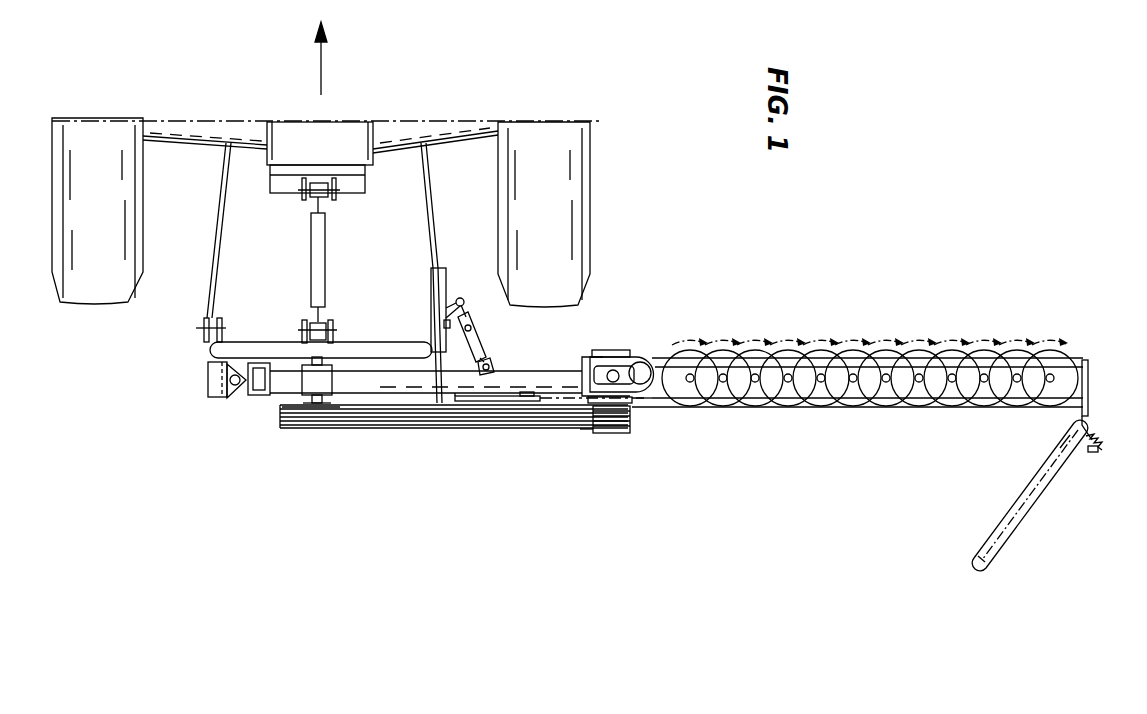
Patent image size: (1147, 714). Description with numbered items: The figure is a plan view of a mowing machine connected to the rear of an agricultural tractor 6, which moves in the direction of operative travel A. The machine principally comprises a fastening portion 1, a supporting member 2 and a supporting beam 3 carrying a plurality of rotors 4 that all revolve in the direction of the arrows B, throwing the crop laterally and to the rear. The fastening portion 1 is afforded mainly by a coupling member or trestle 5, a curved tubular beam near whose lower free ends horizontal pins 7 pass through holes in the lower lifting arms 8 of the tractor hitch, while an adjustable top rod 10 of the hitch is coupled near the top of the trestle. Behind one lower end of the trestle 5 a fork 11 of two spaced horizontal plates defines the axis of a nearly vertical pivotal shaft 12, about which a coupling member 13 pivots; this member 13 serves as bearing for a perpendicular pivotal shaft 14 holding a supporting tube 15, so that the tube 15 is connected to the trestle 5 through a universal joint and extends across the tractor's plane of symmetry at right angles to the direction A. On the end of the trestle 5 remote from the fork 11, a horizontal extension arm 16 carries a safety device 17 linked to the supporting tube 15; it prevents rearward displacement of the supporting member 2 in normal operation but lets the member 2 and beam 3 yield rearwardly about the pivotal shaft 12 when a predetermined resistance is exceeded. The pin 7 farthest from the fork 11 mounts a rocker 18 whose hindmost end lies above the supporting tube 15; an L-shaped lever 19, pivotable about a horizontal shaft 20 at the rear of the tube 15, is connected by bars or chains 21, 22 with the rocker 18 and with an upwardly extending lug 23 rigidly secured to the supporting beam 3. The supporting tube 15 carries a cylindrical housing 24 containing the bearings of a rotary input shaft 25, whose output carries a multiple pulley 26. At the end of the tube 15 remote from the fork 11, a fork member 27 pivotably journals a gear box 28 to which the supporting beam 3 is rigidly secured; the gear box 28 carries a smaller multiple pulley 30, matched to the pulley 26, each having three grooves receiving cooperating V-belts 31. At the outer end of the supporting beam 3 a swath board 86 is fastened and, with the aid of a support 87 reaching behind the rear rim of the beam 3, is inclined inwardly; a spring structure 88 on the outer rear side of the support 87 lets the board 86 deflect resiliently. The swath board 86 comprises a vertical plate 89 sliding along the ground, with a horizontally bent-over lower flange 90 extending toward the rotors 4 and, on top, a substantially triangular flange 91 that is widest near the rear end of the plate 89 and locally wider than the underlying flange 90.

The direction of operative travel A is at (330, 58).
The direction of rotor rotation B is at (870, 327).
The fastening portion 1 is at (390, 335).
The supporting member 2 is at (418, 335).
The supporting beam 3 is at (852, 415).
The rotors 4 is at (725, 413).
The coupling member or trestle 5 is at (207, 349).
The tractor 6 is at (394, 121).
The horizontal pins 7 is at (223, 328).
The lower lifting arms 8 is at (224, 194).
The adjustable top rod 10 is at (326, 256).
The fork 11 is at (208, 378).
The pivotal shaft 12 is at (231, 398).
The coupling member 13 is at (238, 396).
The pivotal shaft 14 is at (258, 397).
The supporting tube 15 is at (546, 378).
The extension arm 16 is at (467, 305).
The safety device 17 is at (490, 350).
The rocker 18 is at (446, 268).
The lever 19 is at (513, 402).
The shaft 20 is at (528, 404).
The bar or chain 21 is at (455, 402).
The bar or chain 22 is at (573, 430).
The lug 23 is at (646, 400).
The cylindrical housing 24 is at (313, 430).
The rotary input shaft 25 is at (306, 362).
The multiple pulley 26 is at (332, 430).
The fork member 27 is at (600, 354).
The gear box 28 is at (638, 348).
The smaller multiple pulley 30 is at (605, 433).
The V-belts 31 is at (580, 427).
The swath board 86 is at (1012, 540).
The support 87 is at (1089, 362).
The spring structure 88 is at (1092, 456).
The vertical plate 89 is at (1052, 494).
The flange 90 is at (1043, 464).
The flange 91 is at (976, 566).